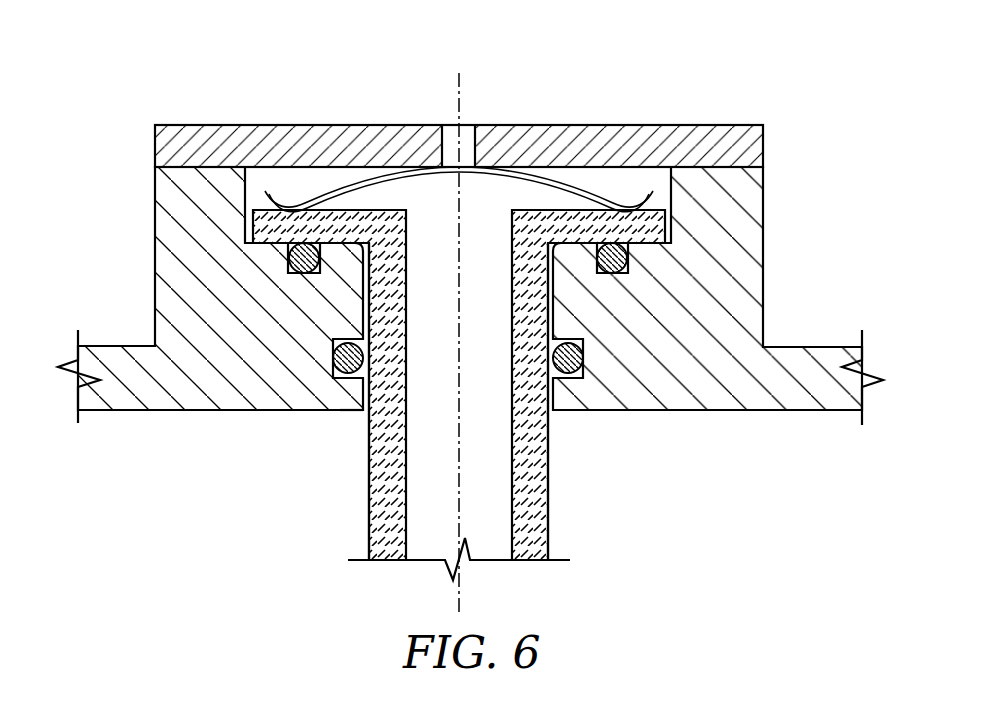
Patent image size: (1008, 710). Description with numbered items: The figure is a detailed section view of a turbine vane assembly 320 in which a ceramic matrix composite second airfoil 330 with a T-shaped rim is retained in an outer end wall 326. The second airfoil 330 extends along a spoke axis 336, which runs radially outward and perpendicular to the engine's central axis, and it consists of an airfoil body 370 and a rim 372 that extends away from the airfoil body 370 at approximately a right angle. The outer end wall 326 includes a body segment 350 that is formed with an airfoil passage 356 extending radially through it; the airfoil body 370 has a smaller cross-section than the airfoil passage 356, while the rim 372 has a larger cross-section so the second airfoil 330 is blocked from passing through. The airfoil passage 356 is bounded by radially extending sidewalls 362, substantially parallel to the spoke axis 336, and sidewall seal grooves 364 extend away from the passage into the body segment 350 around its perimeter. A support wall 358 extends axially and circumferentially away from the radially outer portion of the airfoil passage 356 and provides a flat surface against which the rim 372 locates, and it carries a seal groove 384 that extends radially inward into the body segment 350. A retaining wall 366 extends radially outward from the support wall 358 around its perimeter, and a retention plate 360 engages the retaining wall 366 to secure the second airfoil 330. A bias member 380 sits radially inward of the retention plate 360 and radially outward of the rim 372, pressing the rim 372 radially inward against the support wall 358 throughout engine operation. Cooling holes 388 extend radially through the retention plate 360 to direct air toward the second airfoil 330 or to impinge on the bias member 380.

The turbine vane assembly 320 is at (816, 148).
The outer end wall 326 is at (797, 309).
The second airfoil 330 is at (560, 517).
The spoke axis 336 is at (459, 607).
The body segment 350 is at (218, 425).
The airfoil passage 356 is at (361, 426).
The support wall 358 is at (270, 252).
The retention plate 360 is at (227, 143).
The radially extending sidewalls 362 is at (368, 278).
The sidewall seal grooves 364 is at (335, 357).
The retaining wall 366 is at (190, 215).
The airfoil body 370 is at (548, 475).
The rim 372 is at (636, 226).
The bias member 380 is at (587, 200).
The seal groove 384 is at (287, 262).
The cooling holes 388 is at (467, 106).